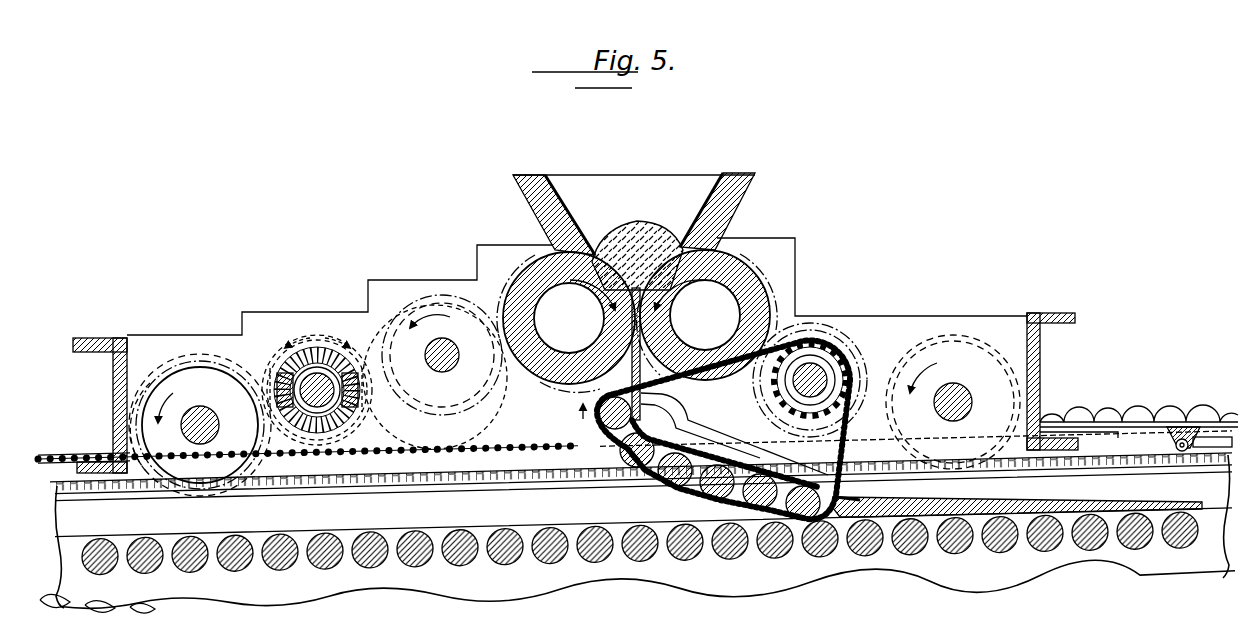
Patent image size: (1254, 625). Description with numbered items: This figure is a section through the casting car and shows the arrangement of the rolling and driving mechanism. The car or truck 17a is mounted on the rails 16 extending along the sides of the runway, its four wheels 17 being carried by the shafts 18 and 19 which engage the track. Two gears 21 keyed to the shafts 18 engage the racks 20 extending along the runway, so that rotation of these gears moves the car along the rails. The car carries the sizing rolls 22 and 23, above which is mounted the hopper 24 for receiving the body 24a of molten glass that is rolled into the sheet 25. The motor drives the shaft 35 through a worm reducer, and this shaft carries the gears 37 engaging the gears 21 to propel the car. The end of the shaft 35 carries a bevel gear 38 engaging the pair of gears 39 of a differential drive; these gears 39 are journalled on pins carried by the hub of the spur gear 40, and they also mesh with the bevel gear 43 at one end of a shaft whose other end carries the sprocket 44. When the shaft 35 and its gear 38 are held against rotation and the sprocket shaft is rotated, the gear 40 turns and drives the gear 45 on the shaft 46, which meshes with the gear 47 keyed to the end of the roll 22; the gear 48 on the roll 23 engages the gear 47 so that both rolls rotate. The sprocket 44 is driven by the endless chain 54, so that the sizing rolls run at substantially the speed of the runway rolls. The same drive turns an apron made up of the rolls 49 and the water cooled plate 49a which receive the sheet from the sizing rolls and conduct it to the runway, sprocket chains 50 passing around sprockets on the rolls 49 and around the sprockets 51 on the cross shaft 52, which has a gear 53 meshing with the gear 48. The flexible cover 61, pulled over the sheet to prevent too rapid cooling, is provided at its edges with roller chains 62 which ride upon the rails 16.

The rails 16 is at (93, 485).
The wheels 17 is at (180, 367).
The car or truck 17a is at (1070, 305).
The shafts 18 is at (200, 405).
The shafts 19 is at (953, 392).
The racks 20 is at (118, 485).
The gears 21 is at (150, 383).
The sizing roll 22 is at (527, 283).
The sizing roll 23 is at (750, 290).
The hopper 24 is at (537, 180).
The body of molten glass 24a is at (650, 222).
The sheet 25 is at (1030, 510).
The shaft 35 is at (328, 382).
The gears 37 is at (278, 376).
The bevel gear 38 is at (278, 384).
The gears 39 is at (373, 345).
The spur gear 40 is at (280, 337).
The bevel gear 43 is at (316, 352).
The sprocket 44 is at (317, 452).
The gear 45 is at (426, 295).
The shaft 46 is at (452, 364).
The gear 47 is at (528, 264).
The gear 48 is at (760, 265).
The apron rolls 49 is at (600, 416).
The water cooled plate 49a is at (848, 522).
The sprocket chains 50 is at (668, 495).
The sprockets 51 is at (775, 393).
The cross shaft 52 is at (818, 376).
The gear 53 is at (820, 333).
The endless chain 54 is at (60, 452).
The cover 61 is at (1196, 435).
The roller chains 62 is at (1210, 440).